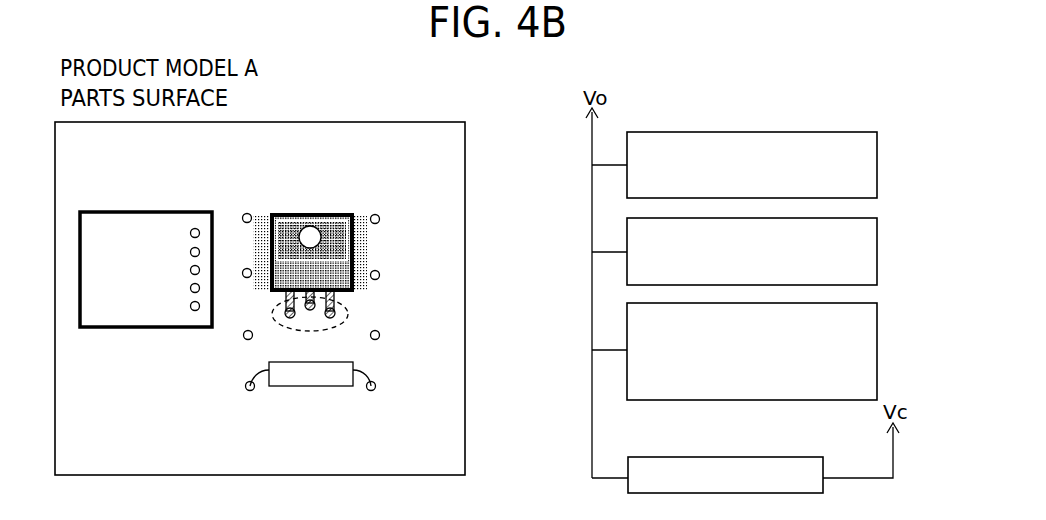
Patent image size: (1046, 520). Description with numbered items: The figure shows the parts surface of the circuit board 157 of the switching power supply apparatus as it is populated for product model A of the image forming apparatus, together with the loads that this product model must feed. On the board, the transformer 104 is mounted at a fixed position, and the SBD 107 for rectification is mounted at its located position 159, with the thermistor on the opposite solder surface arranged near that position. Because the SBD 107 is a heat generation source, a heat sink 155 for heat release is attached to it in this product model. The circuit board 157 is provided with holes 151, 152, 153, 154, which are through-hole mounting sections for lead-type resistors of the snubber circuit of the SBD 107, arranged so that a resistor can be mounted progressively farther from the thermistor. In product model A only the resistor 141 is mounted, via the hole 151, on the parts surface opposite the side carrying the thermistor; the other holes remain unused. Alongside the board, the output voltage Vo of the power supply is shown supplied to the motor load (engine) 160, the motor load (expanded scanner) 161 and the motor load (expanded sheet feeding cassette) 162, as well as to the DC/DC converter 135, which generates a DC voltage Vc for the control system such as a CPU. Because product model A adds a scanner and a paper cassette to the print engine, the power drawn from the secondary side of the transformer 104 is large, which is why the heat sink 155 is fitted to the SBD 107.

The transformer 104 is at (145, 230).
The SBD for rectification 107 is at (297, 212).
The DC/DC converter 135 is at (704, 457).
The resistor 141 is at (305, 386).
The hole 151 is at (245, 386).
The hole 152 is at (244, 335).
The hole 153 is at (245, 277).
The hole 154 is at (243, 217).
The heat sink 155 is at (367, 250).
The circuit board 157 is at (465, 170).
The located position of the SBD 159 is at (348, 317).
The motor load (engine) 160 is at (877, 165).
The motor load (expanded scanner) 161 is at (877, 252).
The motor load (expanded sheet feeding cassette) 162 is at (877, 345).